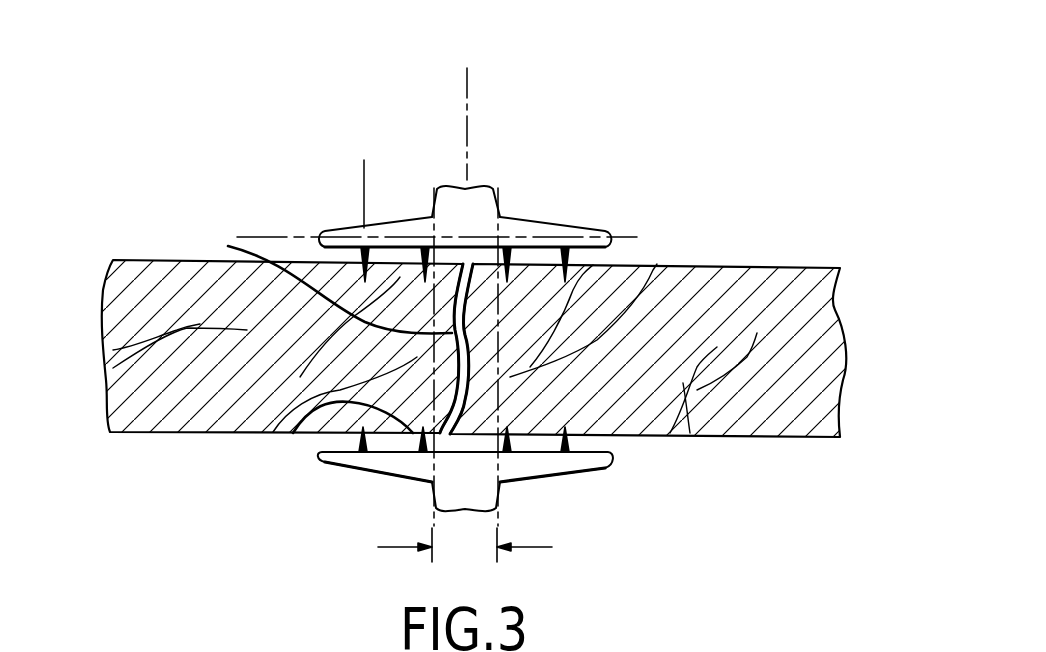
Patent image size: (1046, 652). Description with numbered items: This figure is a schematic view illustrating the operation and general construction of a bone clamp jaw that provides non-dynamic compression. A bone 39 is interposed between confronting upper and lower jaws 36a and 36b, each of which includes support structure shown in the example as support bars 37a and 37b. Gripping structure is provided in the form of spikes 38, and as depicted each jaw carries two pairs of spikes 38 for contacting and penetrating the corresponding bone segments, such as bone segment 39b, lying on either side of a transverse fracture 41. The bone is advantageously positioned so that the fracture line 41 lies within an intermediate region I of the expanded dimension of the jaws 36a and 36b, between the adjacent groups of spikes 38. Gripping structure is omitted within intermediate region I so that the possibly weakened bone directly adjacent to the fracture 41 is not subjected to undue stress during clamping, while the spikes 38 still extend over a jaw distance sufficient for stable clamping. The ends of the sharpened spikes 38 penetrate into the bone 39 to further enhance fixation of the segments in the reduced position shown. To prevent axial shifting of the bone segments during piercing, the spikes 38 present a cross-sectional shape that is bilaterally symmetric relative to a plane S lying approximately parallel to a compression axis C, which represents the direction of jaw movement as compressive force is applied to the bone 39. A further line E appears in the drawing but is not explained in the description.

The bone 39 is at (832, 305).
The bone segment 39b is at (120, 421).
The fracture 41 is at (321, 275).
The upper jaw 36a is at (593, 238).
The support bar 37a is at (530, 232).
The lower jaw 36b is at (605, 478).
The support bar 37b is at (352, 468).
The spikes 38 is at (572, 256).
The compression axis C is at (467, 88).
The plane S is at (363, 198).
The edge line E is at (252, 236).
The intermediate region I is at (469, 562).